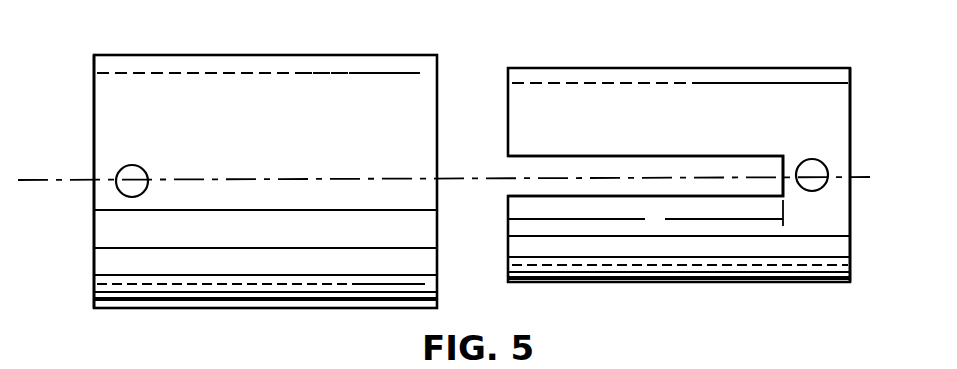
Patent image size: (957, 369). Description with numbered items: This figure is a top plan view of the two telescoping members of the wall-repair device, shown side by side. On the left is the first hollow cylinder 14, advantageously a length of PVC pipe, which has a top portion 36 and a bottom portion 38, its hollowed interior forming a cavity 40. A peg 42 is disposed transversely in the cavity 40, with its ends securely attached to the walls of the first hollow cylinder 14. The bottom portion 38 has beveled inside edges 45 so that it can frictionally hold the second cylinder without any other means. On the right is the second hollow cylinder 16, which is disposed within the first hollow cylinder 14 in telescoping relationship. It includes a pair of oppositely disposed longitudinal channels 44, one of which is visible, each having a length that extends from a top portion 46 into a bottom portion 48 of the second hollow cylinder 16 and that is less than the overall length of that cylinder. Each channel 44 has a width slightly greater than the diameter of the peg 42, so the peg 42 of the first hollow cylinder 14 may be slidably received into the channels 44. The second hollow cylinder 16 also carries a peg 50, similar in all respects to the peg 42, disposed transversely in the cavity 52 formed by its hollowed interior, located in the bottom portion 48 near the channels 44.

The first hollow cylinder 14 is at (248, 45).
The second hollow cylinder 16 is at (598, 50).
The top portion 36 is at (140, 62).
The bottom portion 38 is at (392, 60).
The cavity 40 is at (112, 127).
The peg 42 is at (124, 188).
The longitudinal channel 44 is at (508, 172).
The beveled inside edges 45 is at (422, 75).
The top portion 46 is at (522, 78).
The bottom portion 48 is at (752, 72).
The peg 50 is at (805, 167).
The cavity 52 is at (832, 112).